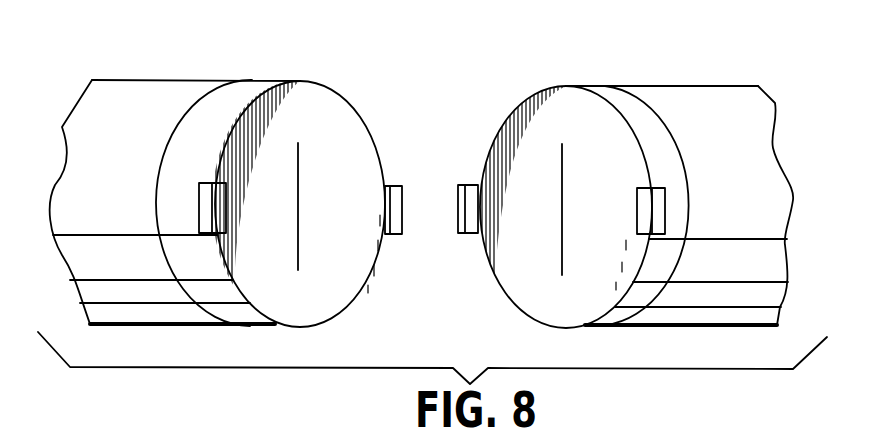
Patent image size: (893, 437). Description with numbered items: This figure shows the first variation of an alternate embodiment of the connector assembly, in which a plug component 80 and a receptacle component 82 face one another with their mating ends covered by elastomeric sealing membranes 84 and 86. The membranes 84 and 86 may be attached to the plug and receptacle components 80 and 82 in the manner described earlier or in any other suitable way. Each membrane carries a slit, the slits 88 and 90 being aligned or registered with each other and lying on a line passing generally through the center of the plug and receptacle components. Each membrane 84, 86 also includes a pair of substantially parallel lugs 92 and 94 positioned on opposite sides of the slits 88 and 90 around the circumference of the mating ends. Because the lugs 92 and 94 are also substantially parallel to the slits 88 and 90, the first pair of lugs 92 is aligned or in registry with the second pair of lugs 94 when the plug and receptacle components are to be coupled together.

The plug component 80 is at (175, 103).
The receptacle component 82 is at (700, 107).
The elastomeric sealing membrane 84 is at (335, 137).
The elastomeric sealing membrane 86 is at (543, 110).
The slit 88 is at (300, 218).
The slit 90 is at (562, 190).
The lugs 92 is at (216, 210).
The lugs 94 is at (463, 235).